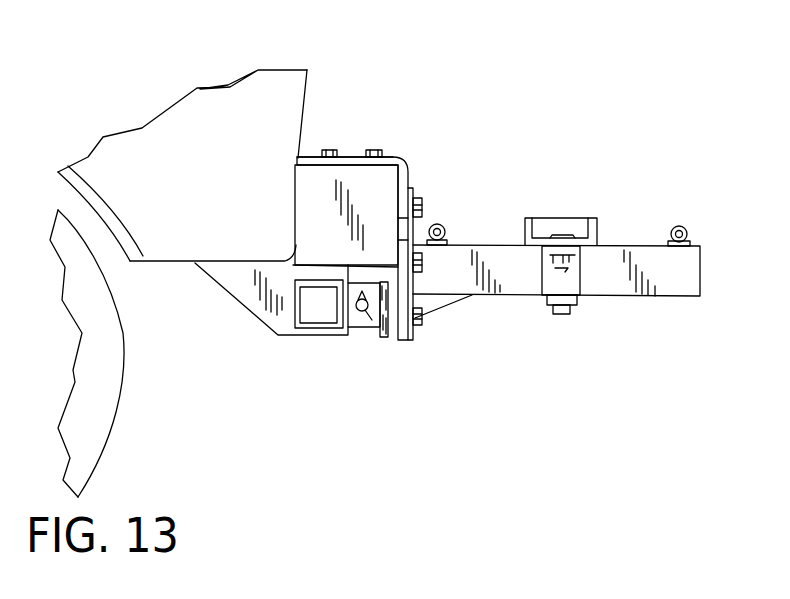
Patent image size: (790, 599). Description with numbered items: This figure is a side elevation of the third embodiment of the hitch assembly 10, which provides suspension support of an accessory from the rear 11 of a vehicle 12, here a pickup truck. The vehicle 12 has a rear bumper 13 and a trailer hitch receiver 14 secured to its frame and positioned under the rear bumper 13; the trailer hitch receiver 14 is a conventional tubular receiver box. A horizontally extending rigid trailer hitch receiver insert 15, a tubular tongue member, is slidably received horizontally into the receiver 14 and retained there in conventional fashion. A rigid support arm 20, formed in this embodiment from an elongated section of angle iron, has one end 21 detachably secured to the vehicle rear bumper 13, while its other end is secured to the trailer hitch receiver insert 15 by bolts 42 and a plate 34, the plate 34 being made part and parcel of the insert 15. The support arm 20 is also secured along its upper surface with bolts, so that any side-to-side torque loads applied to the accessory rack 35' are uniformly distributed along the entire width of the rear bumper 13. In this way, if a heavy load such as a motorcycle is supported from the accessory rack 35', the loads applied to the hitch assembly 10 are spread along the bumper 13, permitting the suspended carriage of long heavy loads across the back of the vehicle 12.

The hitch assembly 10 is at (598, 132).
The rear of vehicle 11 is at (307, 98).
The vehicle 12 is at (130, 138).
The rear bumper 13 is at (318, 229).
The trailer hitch receiver 14 is at (365, 325).
The trailer hitch receiver insert 15 is at (402, 340).
The support arm 20 is at (398, 156).
The end of support arm 21 is at (297, 158).
The plate 34 is at (418, 232).
The accessory rack 35' is at (607, 212).
The bolts 42 is at (422, 204).